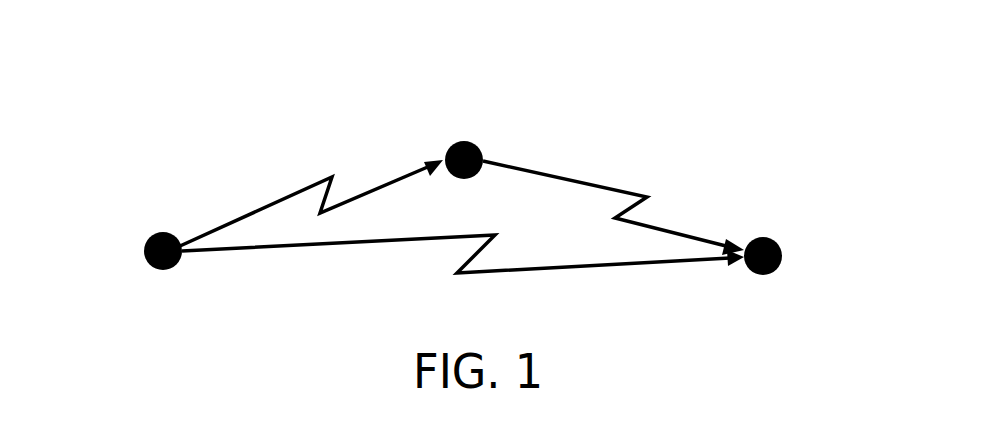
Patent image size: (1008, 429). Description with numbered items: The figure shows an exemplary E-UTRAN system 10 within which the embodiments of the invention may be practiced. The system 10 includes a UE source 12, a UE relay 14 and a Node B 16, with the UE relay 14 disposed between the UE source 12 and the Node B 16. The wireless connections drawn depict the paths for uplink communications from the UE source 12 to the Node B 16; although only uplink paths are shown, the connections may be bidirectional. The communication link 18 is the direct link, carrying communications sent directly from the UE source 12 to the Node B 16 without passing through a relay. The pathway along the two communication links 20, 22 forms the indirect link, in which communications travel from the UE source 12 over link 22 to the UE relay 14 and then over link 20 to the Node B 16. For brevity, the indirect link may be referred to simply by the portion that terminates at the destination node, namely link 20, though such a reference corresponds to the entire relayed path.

The E-UTRAN system 10 is at (143, 157).
The UE source 12 is at (166, 272).
The UE relay 14 is at (453, 135).
The Node B 16 is at (762, 276).
The communication link 18 is at (482, 275).
The communication link 20 is at (570, 175).
The communication link 22 is at (252, 208).